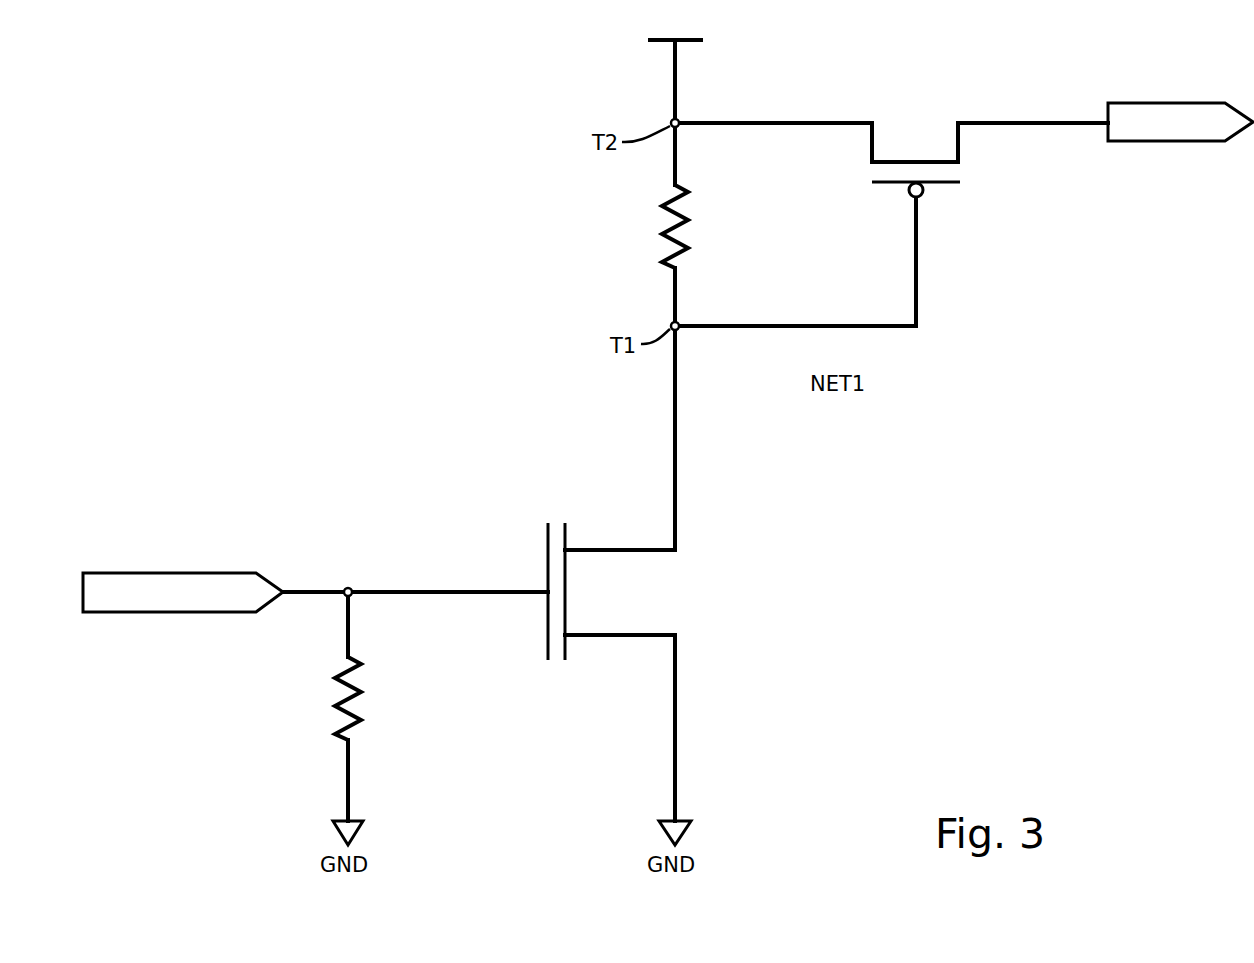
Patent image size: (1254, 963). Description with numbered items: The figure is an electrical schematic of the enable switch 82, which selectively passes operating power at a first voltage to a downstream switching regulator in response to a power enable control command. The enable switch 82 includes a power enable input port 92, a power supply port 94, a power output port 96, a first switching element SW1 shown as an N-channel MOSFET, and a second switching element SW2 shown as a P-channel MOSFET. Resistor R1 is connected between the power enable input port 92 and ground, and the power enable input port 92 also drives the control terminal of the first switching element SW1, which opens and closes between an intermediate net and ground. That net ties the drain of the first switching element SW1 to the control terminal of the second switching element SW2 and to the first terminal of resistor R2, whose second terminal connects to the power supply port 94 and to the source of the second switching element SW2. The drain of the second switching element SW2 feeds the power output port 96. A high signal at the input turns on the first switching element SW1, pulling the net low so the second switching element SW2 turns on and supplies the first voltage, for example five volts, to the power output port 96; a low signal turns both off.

The enable switch 82 is at (398, 250).
The power enable input port 92 is at (186, 573).
The power supply port 94 is at (663, 42).
The power output port 96 is at (1160, 103).
The resistor R1 is at (345, 690).
The resistor R2 is at (666, 242).
The first switching element SW1 is at (540, 548).
The second switching element SW2 is at (917, 148).